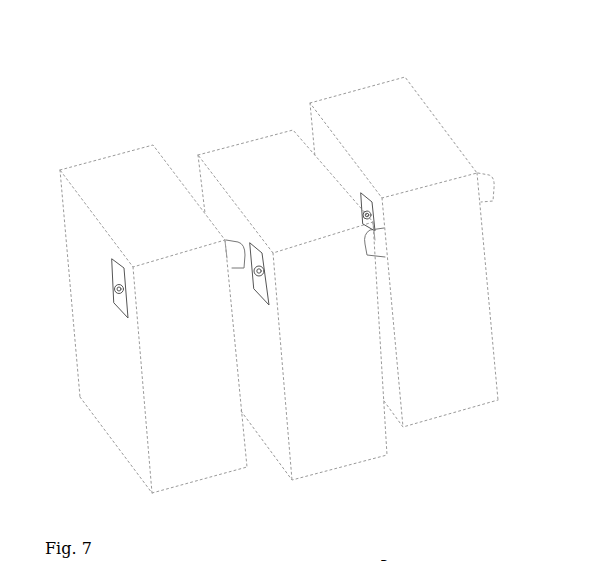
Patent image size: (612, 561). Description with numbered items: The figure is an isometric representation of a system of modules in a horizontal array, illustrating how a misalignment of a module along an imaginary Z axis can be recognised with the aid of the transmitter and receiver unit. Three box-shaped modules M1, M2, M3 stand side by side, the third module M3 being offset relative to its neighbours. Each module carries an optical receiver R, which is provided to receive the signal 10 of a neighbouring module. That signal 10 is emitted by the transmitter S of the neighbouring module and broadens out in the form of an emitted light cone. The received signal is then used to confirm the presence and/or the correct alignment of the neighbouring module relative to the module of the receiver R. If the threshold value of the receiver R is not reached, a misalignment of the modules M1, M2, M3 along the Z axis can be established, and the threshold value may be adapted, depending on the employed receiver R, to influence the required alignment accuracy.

The signal 10 is at (225, 239).
The optical receiver R is at (118, 292).
The transmitter S is at (223, 253).
The module M1 is at (210, 484).
The module M2 is at (339, 477).
The module M3 is at (471, 411).